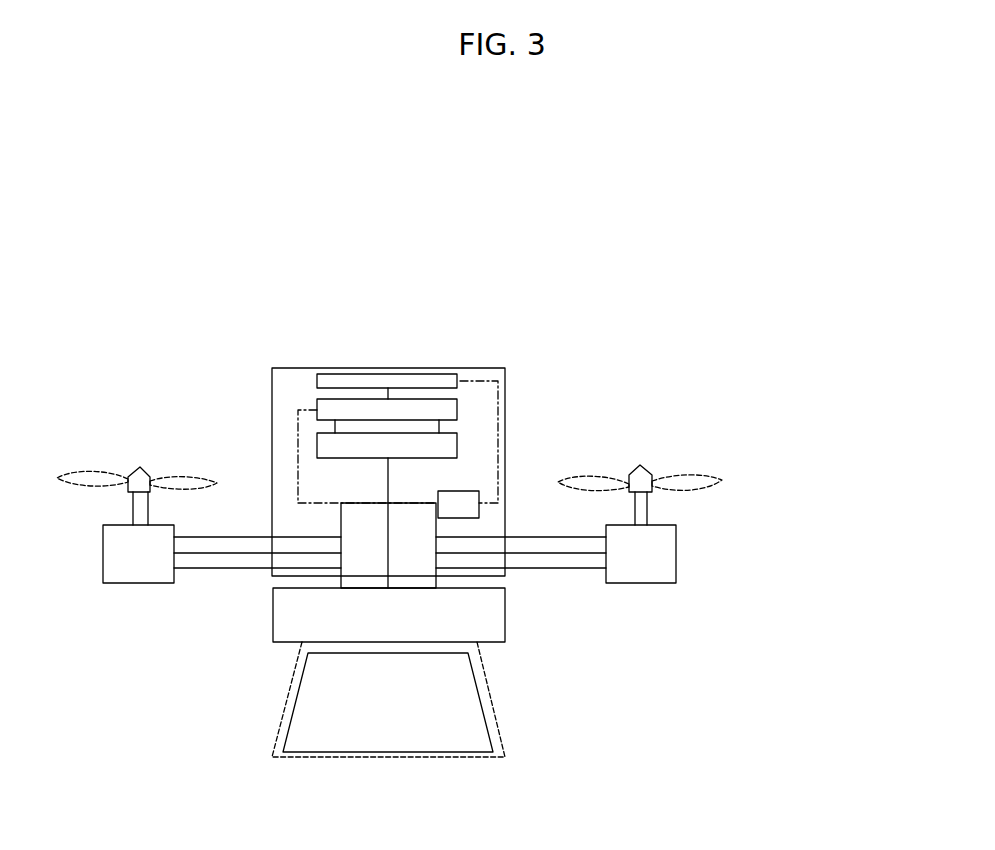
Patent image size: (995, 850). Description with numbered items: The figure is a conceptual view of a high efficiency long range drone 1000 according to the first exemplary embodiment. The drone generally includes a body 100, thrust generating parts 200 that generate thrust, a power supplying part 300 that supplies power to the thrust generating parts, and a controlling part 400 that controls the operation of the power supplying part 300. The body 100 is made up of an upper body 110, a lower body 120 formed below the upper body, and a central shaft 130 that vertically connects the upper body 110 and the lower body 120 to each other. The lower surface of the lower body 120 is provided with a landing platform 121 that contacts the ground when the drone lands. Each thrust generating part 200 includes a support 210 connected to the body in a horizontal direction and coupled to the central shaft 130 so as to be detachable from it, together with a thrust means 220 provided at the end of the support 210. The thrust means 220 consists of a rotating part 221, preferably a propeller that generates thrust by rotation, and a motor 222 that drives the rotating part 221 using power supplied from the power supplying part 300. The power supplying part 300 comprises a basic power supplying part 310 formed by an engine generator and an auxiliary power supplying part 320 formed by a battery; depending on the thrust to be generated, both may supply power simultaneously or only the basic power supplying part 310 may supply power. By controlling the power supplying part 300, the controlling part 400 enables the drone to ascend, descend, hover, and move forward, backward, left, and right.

The high efficiency long range drone 1000 is at (443, 283).
The body 100 is at (880, 517).
The upper body 110 is at (478, 523).
The lower body 120 is at (478, 625).
The landing platform 121 is at (488, 710).
The central shaft 130 is at (423, 549).
The thrust generating part 200 is at (123, 234).
The support 210 is at (202, 550).
The thrust means 220 is at (90, 292).
The rotating part 221 is at (116, 473).
The motor 222 is at (140, 540).
The power supplying part 300 is at (880, 372).
The basic power supplying part 310 is at (393, 428).
The auxiliary power supplying part 320 is at (393, 380).
The controlling part 400 is at (460, 501).